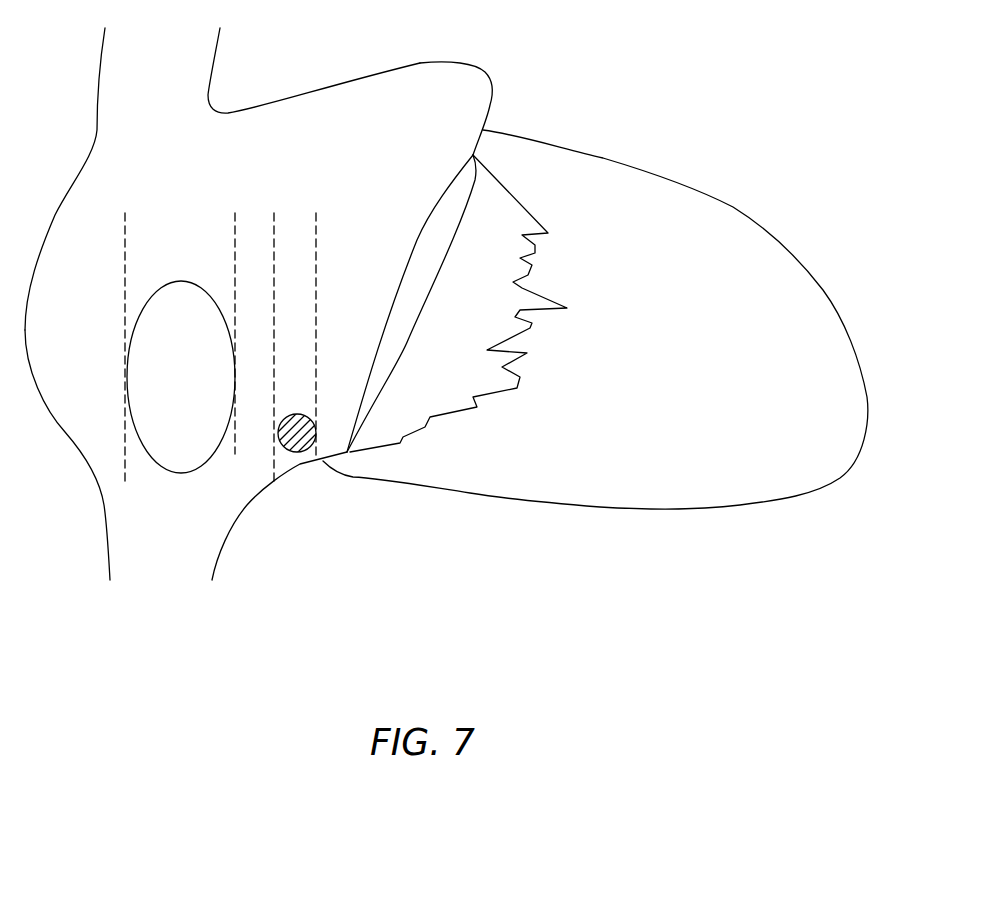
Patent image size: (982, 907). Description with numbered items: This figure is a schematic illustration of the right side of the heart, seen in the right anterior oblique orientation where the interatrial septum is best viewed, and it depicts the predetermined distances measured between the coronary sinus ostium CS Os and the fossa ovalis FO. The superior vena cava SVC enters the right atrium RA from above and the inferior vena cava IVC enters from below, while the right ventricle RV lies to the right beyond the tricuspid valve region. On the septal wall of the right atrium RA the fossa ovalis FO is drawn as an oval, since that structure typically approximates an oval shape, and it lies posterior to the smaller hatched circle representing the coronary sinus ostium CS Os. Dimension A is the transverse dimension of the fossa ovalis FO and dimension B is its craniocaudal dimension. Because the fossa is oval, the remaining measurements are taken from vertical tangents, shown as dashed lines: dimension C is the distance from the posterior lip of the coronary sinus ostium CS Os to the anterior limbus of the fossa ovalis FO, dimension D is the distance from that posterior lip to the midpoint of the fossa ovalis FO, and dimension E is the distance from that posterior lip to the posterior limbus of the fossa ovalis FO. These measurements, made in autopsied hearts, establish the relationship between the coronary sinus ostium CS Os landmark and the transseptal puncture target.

The superior vena cava SVC is at (180, 75).
The right atrium RA is at (80, 304).
The inferior vena cava IVC is at (170, 565).
The right ventricle RV is at (691, 349).
The fossa ovalis FO is at (198, 290).
The coronary sinus ostium CS Os is at (297, 452).
The transverse dimension of the fossa ovalis A is at (236, 377).
The craniocaudal dimension of the fossa ovalis B is at (181, 281).
The distance from the posterior lip of the coronary sinus ostium to the anterior lim C is at (274, 436).
The distance from the posterior lip of the coronary sinus ostium to the midpoint of D is at (274, 403).
The distance from the posterior lip of the coronary sinus ostium to the posterior li E is at (274, 480).